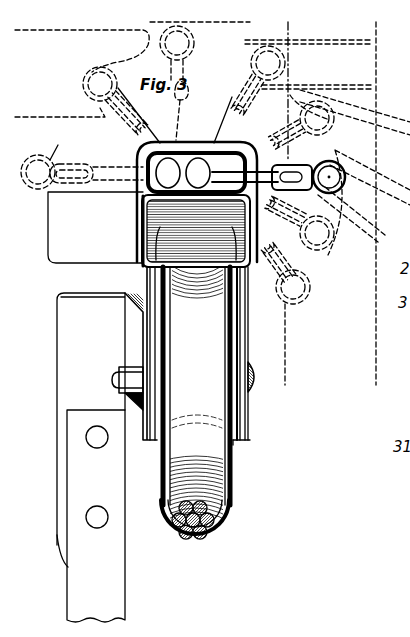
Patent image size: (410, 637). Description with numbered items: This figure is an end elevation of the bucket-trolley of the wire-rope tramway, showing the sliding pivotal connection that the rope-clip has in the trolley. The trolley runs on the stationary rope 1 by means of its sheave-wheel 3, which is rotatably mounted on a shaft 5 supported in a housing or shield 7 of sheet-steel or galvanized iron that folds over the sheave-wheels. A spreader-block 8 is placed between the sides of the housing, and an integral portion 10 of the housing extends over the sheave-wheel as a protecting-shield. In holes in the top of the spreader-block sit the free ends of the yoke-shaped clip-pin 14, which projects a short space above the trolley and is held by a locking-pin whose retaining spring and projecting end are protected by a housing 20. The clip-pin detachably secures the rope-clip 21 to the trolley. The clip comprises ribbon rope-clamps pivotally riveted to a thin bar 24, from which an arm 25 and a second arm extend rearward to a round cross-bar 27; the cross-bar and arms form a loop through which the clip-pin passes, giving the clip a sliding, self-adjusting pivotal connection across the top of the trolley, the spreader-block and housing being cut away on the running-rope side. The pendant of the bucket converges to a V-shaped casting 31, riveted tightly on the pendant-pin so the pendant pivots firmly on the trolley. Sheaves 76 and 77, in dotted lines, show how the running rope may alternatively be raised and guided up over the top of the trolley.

The stationary rope 1 is at (195, 535).
The sheave-wheel 3 is at (196, 452).
The shaft 5 is at (291, 385).
The housing or shield 7 is at (145, 229).
The spreader-block 8 is at (245, 441).
The integral portion 10 is at (198, 256).
The clip-pin 14 is at (200, 150).
The housing 20 is at (95, 227).
The rope-clip 21 is at (262, 172).
The thin bar 24 is at (299, 168).
The arm 25 is at (234, 148).
The cross-bar 27 is at (145, 212).
The V-shaped casting 31 is at (107, 444).
The sheave 76 is at (322, 52).
The sheave 77 is at (150, 22).